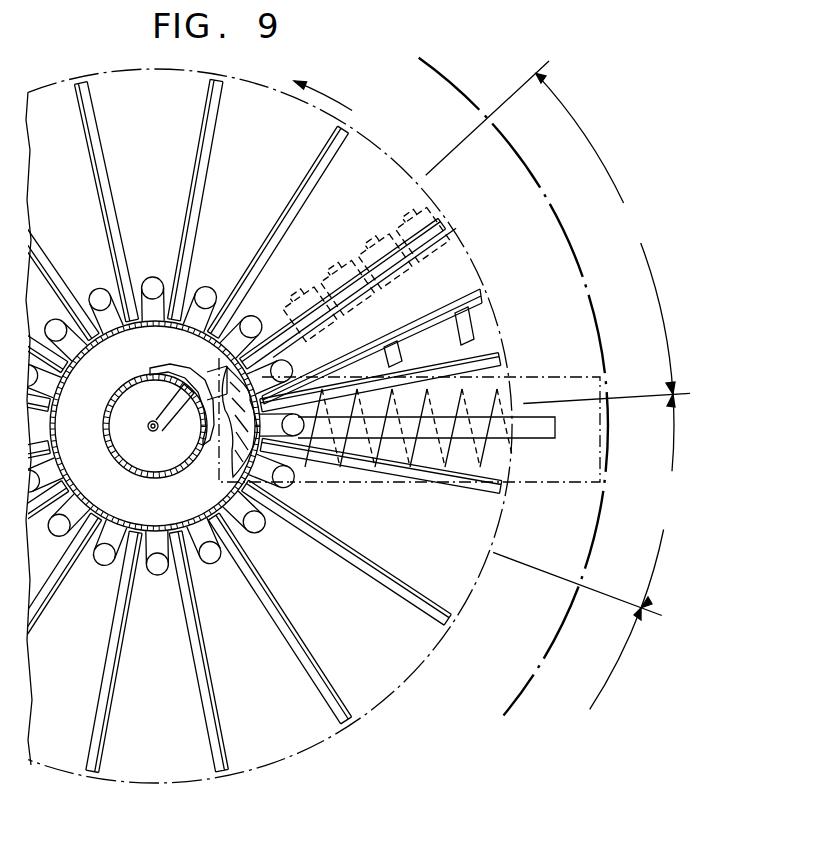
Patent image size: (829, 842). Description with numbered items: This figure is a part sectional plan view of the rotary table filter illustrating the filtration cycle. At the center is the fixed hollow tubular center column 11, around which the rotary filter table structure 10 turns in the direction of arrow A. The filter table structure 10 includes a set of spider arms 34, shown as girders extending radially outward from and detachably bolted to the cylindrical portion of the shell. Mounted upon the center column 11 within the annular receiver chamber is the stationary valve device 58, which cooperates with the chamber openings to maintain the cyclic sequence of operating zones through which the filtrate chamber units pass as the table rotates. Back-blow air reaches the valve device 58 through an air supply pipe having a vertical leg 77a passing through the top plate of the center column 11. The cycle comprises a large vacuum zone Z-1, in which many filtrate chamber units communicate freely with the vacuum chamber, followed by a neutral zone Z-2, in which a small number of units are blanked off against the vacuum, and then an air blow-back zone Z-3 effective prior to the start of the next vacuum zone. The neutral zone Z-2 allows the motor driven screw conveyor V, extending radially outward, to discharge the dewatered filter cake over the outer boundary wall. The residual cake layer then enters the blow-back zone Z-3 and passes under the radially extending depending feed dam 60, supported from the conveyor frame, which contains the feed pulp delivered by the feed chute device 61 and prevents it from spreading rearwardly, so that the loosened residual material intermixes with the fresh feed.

The spider arms 34 is at (210, 181).
The center column 11 is at (138, 473).
The vertical leg 77a is at (153, 431).
The valve device 58 is at (212, 456).
The screw conveyor V is at (490, 455).
The feed dam 60 is at (483, 306).
The feed chute device 61 is at (327, 282).
The arrow A is at (337, 100).
The filter table structure 10 is at (419, 58).
The vacuum zone Z-1 is at (537, 73).
The neutral zone Z-2 is at (589, 504).
The air blow-back zone Z-3 is at (558, 232).